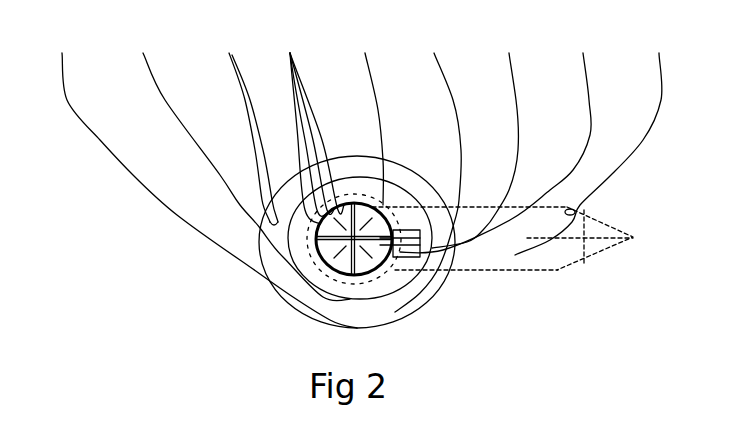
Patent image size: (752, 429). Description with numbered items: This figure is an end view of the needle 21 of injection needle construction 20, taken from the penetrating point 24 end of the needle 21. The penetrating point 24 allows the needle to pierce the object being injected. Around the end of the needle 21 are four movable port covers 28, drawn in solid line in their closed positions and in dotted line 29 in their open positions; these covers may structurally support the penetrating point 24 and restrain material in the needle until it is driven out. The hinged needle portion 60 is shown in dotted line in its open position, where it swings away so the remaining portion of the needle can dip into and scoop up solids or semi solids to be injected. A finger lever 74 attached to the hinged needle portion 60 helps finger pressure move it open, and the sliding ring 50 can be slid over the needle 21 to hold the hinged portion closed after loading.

The injection needle construction 20 is at (296, 254).
The needle 21 is at (200, 171).
The sliding ring 50 is at (234, 157).
The dotted line (open position of port covers) 29 is at (396, 133).
The movable port covers 28 is at (305, 119).
The finger lever 74 is at (428, 163).
The penetrating point 24 is at (478, 131).
The hinged needle portion (open position) 60 is at (523, 142).